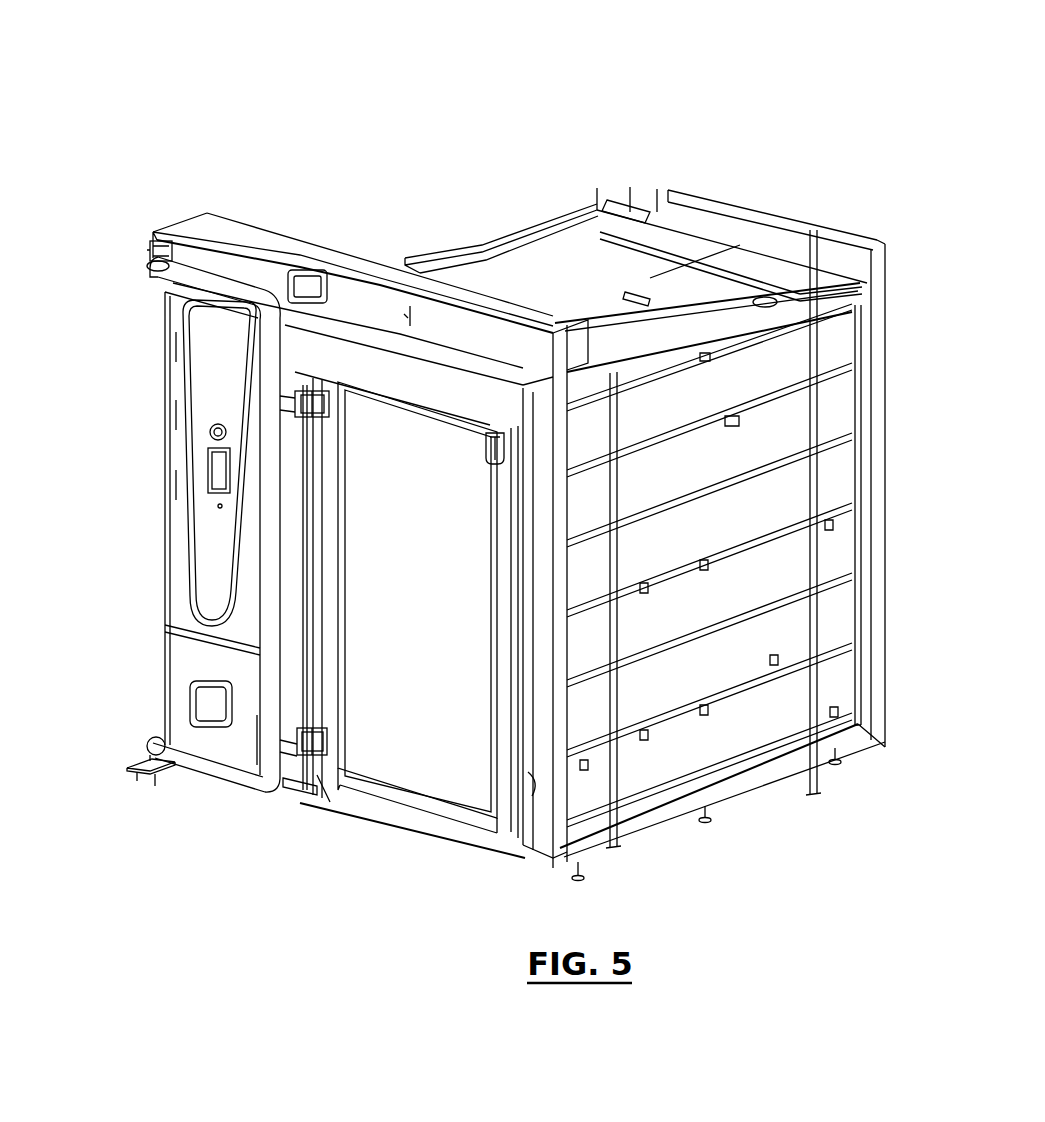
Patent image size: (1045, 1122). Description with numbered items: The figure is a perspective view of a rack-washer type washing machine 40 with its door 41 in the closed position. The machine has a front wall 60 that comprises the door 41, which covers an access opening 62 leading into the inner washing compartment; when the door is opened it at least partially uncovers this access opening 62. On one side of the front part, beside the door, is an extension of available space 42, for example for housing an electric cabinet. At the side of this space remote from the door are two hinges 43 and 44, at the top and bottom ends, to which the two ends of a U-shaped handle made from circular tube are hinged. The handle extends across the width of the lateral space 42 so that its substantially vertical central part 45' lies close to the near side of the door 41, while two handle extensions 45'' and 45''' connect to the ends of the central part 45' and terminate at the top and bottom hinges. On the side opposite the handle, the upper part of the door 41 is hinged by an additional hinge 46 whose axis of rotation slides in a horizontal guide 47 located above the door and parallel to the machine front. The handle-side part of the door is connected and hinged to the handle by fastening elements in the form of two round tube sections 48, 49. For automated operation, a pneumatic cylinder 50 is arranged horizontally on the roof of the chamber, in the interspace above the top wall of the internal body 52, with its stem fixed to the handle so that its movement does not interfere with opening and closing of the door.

The washing machine 40 is at (618, 108).
The door 41 is at (395, 522).
The extension of available space 42 is at (205, 597).
The hinge 43 is at (173, 250).
The hinge 44 is at (128, 764).
The central part of the handle 45' is at (164, 695).
The upper handle extension 45'' is at (224, 464).
The lower handle extension 45''' is at (213, 791).
The additional hinge 46 is at (500, 432).
The horizontal guide 47 is at (365, 355).
The round tube section 48 is at (298, 398).
The round tube section 49 is at (307, 755).
The pneumatic cylinder 50 is at (463, 250).
The internal body 52 is at (608, 275).
The front wall 60 is at (538, 857).
The access opening 62 is at (533, 780).